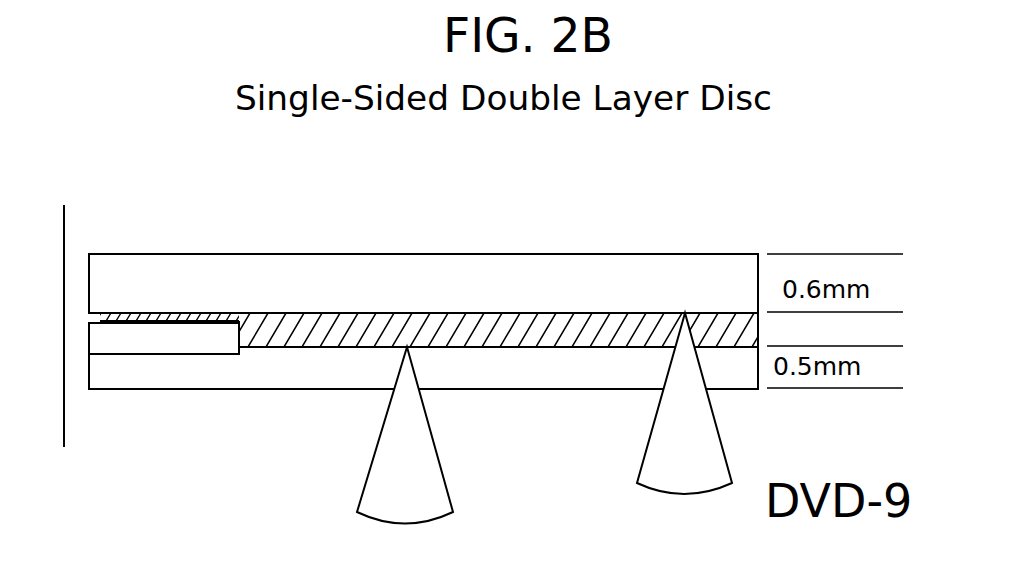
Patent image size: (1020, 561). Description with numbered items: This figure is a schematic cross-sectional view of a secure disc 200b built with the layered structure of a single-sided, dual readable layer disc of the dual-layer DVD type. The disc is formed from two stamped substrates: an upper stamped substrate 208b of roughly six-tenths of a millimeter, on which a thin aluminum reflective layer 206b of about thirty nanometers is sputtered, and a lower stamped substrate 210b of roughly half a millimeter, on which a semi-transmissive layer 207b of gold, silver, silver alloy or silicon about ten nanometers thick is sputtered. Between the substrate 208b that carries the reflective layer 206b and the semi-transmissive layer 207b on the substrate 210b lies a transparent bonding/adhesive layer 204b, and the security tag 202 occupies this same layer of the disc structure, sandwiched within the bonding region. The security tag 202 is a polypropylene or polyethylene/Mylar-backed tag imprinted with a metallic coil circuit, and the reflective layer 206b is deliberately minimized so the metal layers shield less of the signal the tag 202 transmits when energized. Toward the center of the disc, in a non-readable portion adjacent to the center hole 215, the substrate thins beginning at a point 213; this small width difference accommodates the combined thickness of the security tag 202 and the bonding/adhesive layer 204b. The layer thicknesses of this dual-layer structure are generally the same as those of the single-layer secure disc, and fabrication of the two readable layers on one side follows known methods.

The secure disc 200b is at (430, 339).
The security tag 202 is at (153, 330).
The transparent bonding/adhesive layer 204b is at (537, 328).
The reflective layer 206b is at (345, 316).
The semi-transmissive layer 207b is at (452, 340).
The stamped substrate 208b is at (582, 183).
The stamped substrate 210b is at (727, 372).
The point 213 is at (169, 412).
The center hole 215 is at (73, 382).